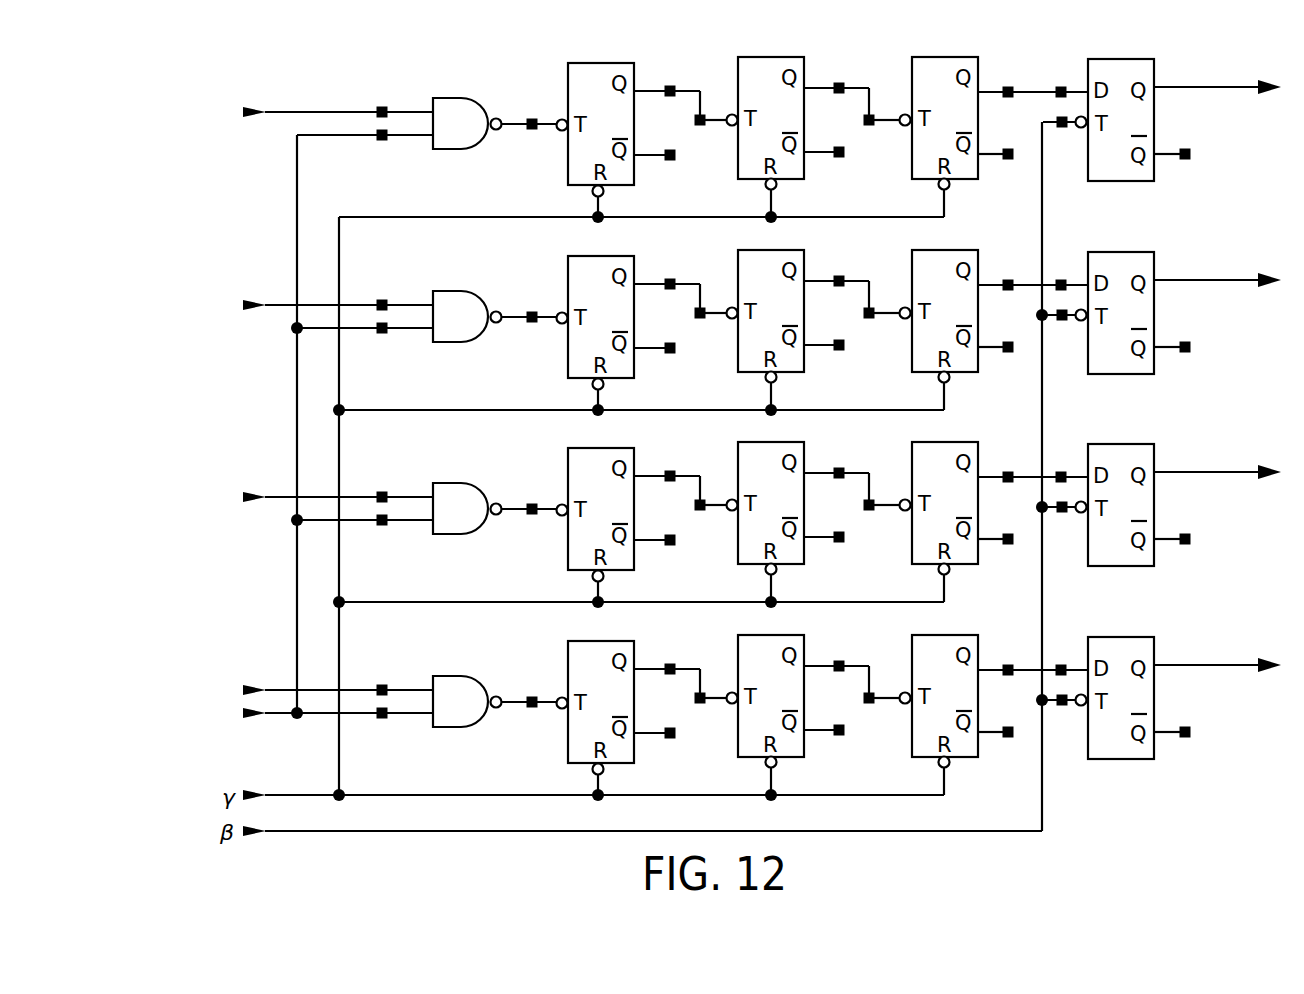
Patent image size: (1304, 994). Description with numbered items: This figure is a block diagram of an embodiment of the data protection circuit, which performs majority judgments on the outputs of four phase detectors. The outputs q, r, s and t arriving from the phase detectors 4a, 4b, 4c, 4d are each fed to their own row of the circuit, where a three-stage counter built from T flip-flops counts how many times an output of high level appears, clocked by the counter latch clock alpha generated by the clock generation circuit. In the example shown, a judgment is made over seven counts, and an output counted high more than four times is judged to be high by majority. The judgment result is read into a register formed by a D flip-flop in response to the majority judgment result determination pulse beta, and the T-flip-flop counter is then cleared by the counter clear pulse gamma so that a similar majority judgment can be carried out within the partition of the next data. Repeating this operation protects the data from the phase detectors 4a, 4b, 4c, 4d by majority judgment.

The phase detector 4a is at (271, 97).
The phase detector 4b is at (270, 287).
The phase detector 4c is at (270, 476).
The phase detector 4d is at (269, 673).